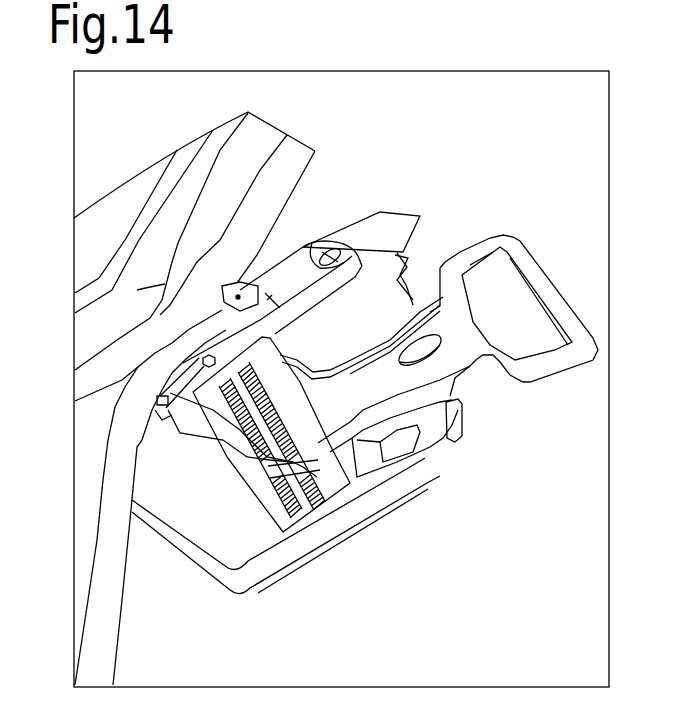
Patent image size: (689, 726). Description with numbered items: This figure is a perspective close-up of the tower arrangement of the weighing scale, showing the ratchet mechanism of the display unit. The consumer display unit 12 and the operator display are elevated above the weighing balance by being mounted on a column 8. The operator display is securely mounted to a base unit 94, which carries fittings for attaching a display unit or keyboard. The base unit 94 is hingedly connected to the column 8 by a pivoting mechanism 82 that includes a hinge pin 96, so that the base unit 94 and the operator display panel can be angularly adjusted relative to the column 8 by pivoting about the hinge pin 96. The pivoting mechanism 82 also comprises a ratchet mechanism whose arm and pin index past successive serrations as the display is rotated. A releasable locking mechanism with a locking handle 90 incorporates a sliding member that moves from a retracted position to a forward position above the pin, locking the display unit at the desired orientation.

The column 8 is at (107, 607).
The consumer display unit 12 is at (132, 200).
The pivoting mechanism 82 is at (226, 454).
The locking handle 90 is at (514, 287).
The base unit 94 is at (460, 434).
The hinge pin 96 is at (328, 250).